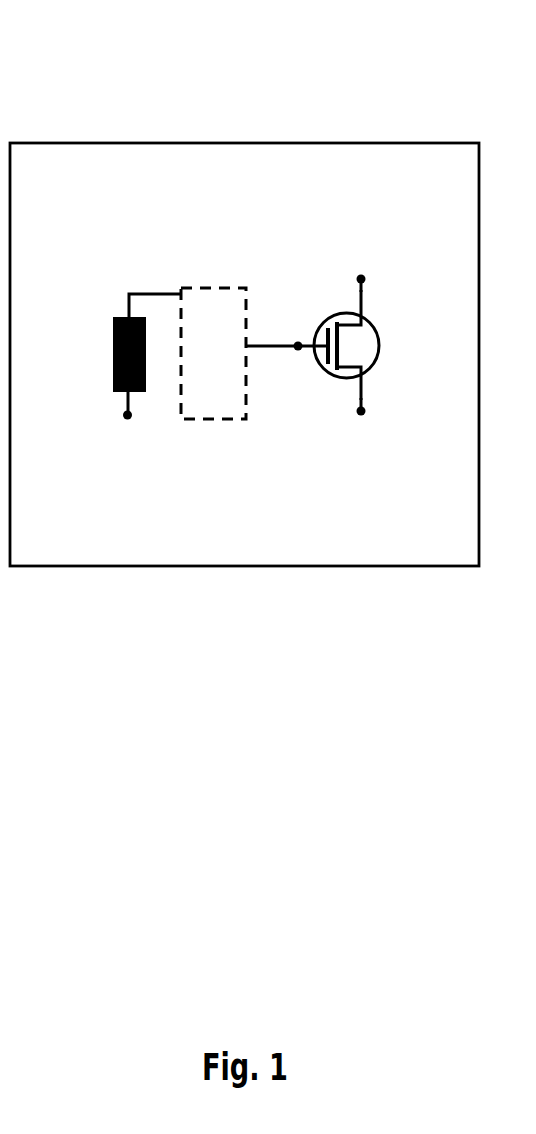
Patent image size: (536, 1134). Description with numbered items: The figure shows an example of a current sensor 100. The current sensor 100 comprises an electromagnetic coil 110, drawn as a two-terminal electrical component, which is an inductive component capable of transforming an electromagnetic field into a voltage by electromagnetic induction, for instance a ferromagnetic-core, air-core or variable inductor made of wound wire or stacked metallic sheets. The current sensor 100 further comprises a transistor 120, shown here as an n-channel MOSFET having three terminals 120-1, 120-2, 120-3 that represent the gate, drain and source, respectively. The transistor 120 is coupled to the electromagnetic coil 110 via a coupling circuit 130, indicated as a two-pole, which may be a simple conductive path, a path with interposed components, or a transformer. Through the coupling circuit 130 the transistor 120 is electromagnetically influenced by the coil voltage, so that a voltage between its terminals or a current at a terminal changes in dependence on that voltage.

The current sensor 100 is at (118, 75).
The electromagnetic coil 110 is at (113, 354).
The coupling circuit 130 is at (213, 288).
The transistor 120 is at (379, 345).
The gate terminal 120-1 is at (298, 341).
The drain terminal 120-2 is at (360, 277).
The source terminal 120-3 is at (361, 414).